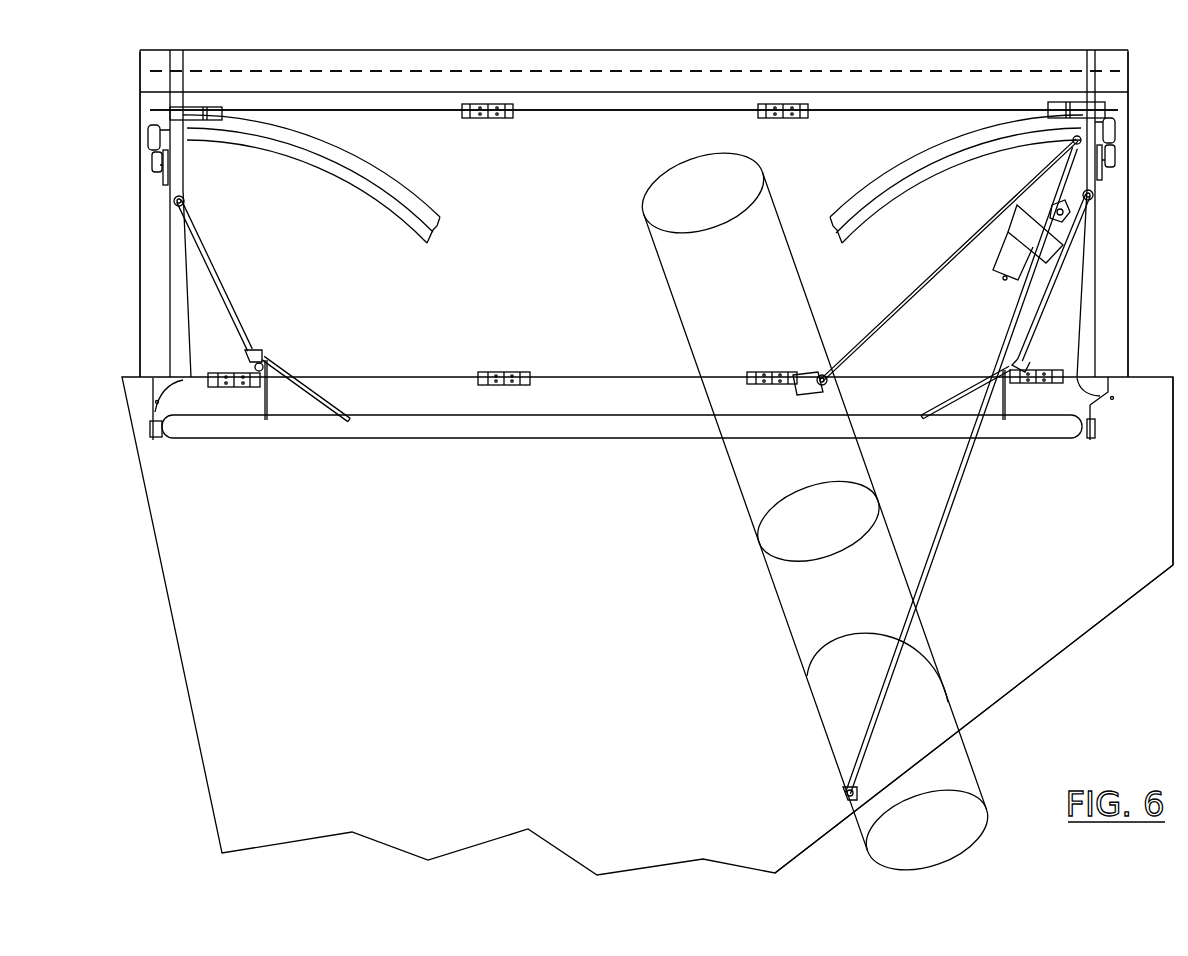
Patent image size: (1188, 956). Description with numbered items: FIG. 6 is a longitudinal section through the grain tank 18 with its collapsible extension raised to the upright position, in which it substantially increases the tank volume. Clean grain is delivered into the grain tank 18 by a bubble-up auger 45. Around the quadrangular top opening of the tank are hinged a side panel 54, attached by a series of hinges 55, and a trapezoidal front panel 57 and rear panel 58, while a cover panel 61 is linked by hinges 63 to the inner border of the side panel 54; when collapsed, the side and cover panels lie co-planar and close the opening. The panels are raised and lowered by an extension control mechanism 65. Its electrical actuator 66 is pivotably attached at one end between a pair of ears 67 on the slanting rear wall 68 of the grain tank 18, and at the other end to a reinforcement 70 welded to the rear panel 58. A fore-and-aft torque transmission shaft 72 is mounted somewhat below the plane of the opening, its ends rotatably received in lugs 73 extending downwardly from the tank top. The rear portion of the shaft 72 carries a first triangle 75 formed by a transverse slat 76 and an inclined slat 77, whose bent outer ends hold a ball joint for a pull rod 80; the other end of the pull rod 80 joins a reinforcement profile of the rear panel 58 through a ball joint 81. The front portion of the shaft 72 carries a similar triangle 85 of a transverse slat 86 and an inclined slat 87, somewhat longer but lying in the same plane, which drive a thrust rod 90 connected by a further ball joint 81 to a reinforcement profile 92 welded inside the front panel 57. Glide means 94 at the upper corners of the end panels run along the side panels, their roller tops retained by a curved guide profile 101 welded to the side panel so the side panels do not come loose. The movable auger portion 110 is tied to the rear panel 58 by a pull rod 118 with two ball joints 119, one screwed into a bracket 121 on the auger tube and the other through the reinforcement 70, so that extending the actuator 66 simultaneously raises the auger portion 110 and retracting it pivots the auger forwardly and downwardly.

The grain tank 18 is at (1127, 645).
The bubble-up auger 45 is at (718, 684).
The side panel 54 is at (145, 232).
The hinges 55 is at (505, 372).
The front panel 57 is at (167, 326).
The rear panel 58 is at (1098, 305).
The cover panel 61 is at (148, 80).
The hinges 63 is at (485, 120).
The extension control mechanism 65 is at (599, 452).
The electrical actuator 66 is at (955, 520).
The ears 67 is at (845, 810).
The slanting rear wall 68 is at (1030, 675).
The reinforcement 70 is at (1092, 268).
The torque transmission shaft 72 is at (388, 438).
The lugs 73 is at (147, 408).
The first triangle 75 is at (941, 278).
The transverse slat 76 is at (1000, 395).
The inclined slat 77 is at (940, 403).
The pull rod 80 is at (1038, 320).
The ball joint 81 is at (174, 200).
The triangle 85 is at (279, 311).
The transverse slat 86 is at (264, 398).
The inclined slat 87 is at (330, 402).
The thrust rod 90 is at (227, 288).
The reinforcement profile 92 is at (180, 285).
The glide means 94 is at (113, 157).
The curved guide profile 101 is at (345, 183).
The movable auger portion 110 is at (668, 298).
The pull rod 118 is at (871, 332).
The ball joints 119 is at (1072, 143).
The bracket 121 is at (826, 392).